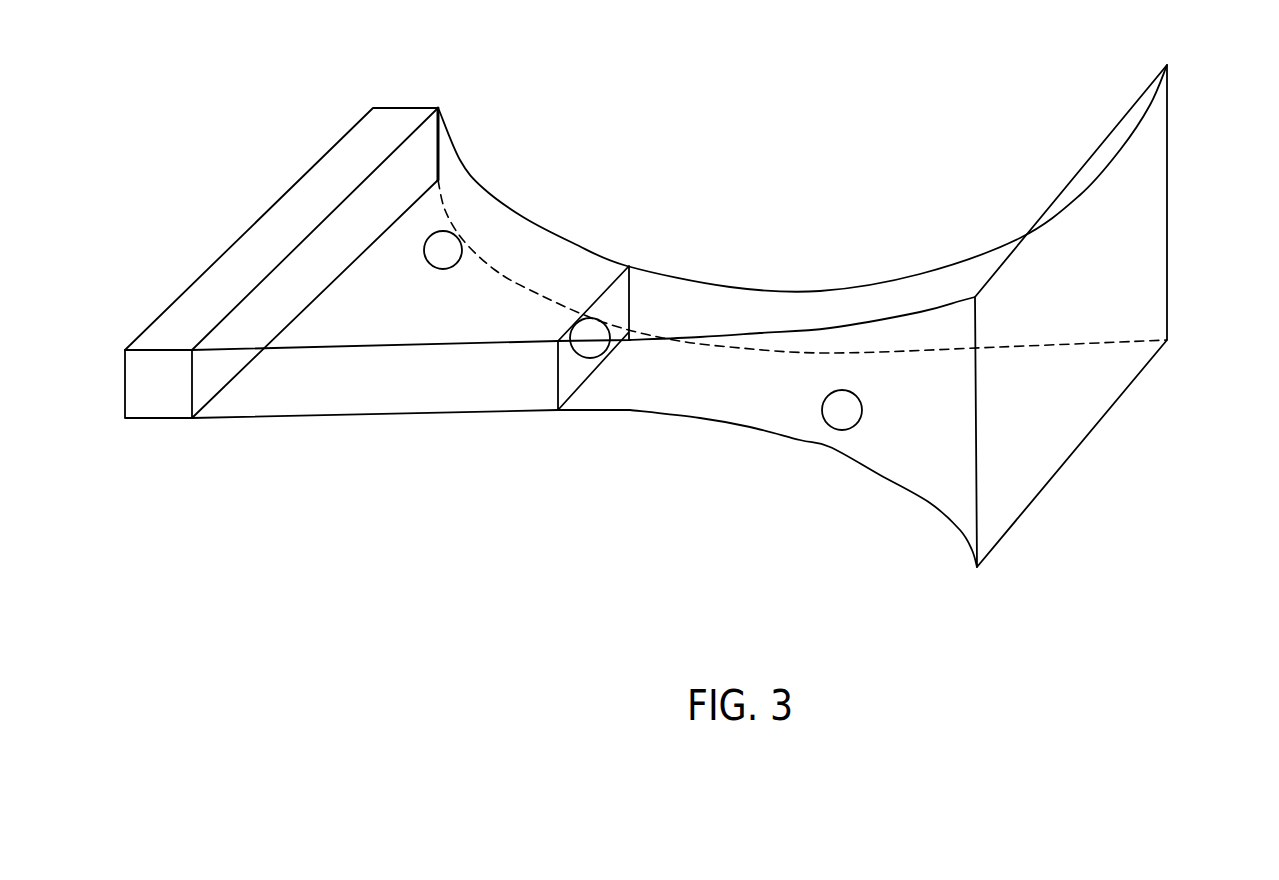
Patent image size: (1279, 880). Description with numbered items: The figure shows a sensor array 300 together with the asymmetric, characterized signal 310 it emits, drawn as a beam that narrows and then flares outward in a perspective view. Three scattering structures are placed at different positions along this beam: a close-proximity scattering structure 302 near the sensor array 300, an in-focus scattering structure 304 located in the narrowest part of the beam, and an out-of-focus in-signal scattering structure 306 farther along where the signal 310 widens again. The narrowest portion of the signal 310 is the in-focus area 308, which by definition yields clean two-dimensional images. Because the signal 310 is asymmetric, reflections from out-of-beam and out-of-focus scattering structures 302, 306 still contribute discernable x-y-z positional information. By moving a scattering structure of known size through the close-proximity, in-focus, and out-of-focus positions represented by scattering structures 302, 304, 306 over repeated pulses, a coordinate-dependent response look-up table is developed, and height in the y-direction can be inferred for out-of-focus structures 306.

The sensor array 300 is at (305, 217).
The close-proximity scattering structure 302 is at (447, 243).
The in-focus scattering structure 304 is at (590, 345).
The out-of-focus in-signal scattering structure 306 is at (837, 415).
The in-focus area 308 is at (587, 347).
The characterized signal 310 is at (1095, 300).